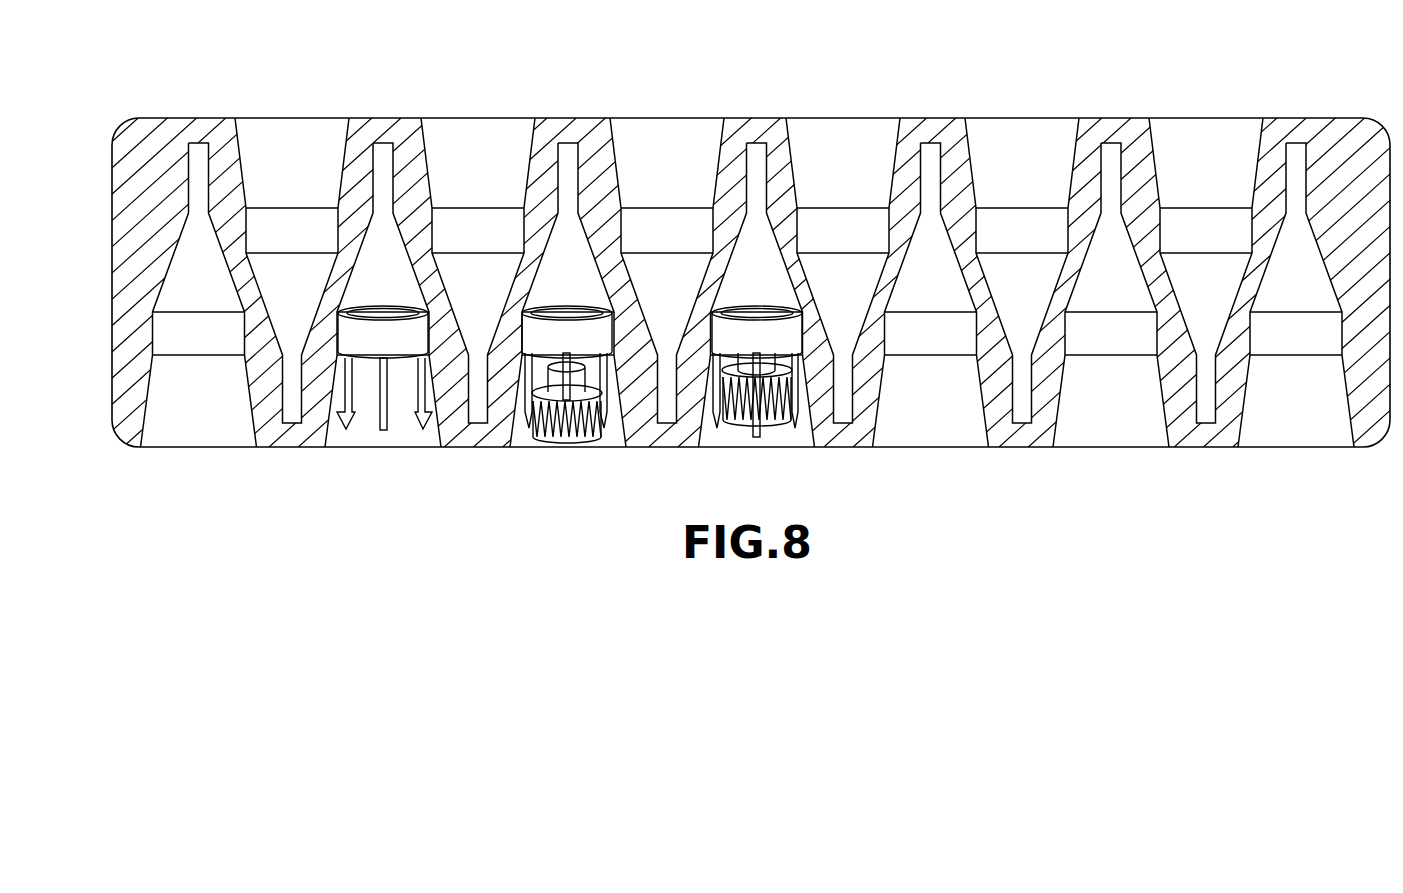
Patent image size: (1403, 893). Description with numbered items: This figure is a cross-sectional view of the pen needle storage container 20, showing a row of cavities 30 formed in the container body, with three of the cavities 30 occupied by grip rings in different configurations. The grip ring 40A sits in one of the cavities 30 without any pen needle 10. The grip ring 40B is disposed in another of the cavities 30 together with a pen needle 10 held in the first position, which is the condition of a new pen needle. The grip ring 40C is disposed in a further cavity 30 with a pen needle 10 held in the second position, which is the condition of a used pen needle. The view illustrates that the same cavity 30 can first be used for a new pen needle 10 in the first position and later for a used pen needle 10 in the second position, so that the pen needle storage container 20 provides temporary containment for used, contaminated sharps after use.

The pen needle 10 is at (560, 445).
The pen needle storage container 20 is at (1347, 118).
The cavity 30 is at (1208, 142).
The grip ring 40A is at (372, 337).
The grip ring 40B is at (538, 292).
The grip ring 40C is at (743, 337).